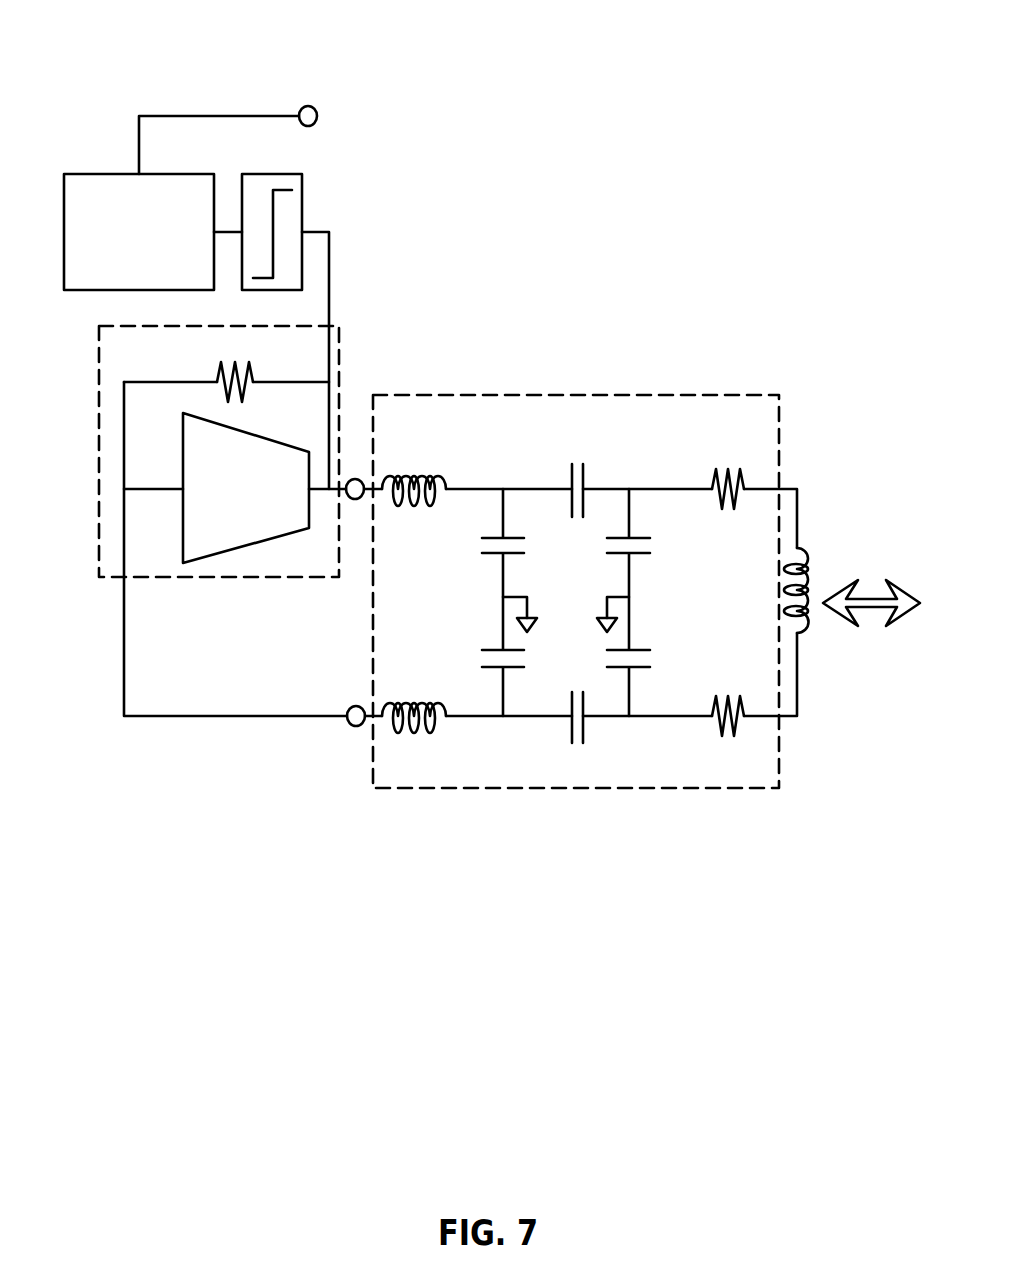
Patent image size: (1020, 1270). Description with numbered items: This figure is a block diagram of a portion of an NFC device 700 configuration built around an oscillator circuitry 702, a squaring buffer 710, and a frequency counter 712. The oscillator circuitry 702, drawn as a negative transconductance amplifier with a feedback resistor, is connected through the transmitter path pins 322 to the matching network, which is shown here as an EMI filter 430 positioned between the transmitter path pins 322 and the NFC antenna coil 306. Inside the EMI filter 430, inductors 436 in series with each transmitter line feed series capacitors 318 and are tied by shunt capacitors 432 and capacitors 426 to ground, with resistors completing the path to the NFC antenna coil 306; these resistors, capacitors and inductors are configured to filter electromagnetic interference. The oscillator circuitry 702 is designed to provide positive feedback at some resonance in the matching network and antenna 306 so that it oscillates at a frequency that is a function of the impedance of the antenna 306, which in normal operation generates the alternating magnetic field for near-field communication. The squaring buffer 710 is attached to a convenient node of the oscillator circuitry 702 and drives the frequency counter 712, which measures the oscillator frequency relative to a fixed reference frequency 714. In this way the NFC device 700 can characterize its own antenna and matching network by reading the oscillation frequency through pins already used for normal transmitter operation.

The NFC device 700 is at (793, 60).
The frequency counter 712 is at (118, 173).
The squaring buffer 710 is at (268, 172).
The fixed reference frequency 714 is at (293, 113).
The oscillator circuitry 702 is at (338, 332).
The transmitter path pins 322 is at (352, 500).
The EMI filter 430 is at (635, 393).
The inductors 436 is at (412, 477).
The capacitors 318 is at (587, 473).
The capacitors 432 is at (493, 553).
The capacitors 426 is at (643, 555).
The NFC antenna coil 306 is at (805, 630).